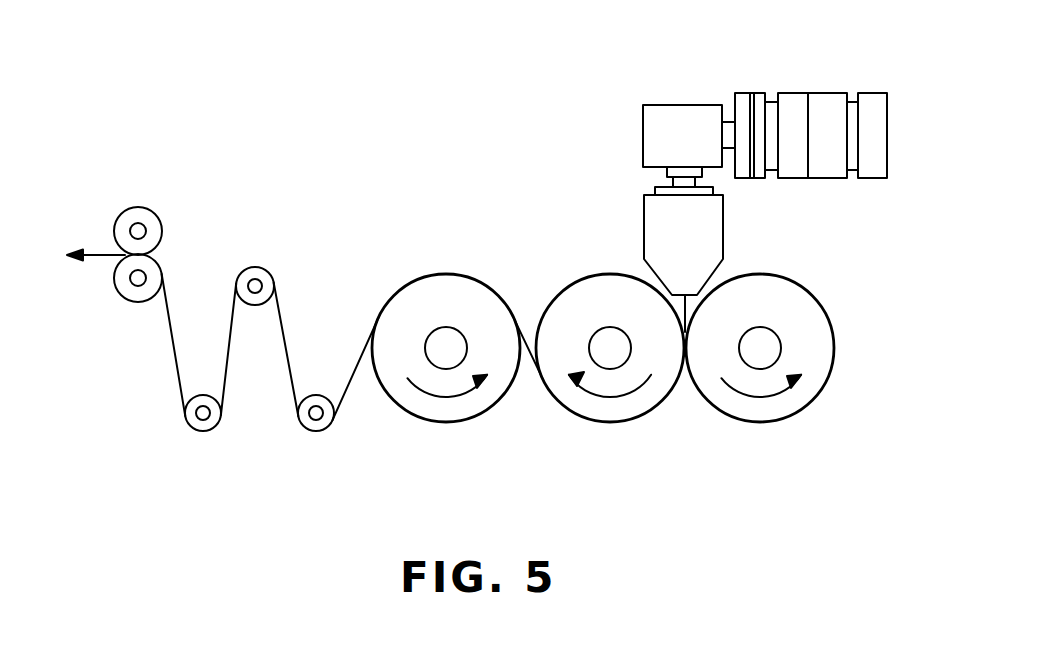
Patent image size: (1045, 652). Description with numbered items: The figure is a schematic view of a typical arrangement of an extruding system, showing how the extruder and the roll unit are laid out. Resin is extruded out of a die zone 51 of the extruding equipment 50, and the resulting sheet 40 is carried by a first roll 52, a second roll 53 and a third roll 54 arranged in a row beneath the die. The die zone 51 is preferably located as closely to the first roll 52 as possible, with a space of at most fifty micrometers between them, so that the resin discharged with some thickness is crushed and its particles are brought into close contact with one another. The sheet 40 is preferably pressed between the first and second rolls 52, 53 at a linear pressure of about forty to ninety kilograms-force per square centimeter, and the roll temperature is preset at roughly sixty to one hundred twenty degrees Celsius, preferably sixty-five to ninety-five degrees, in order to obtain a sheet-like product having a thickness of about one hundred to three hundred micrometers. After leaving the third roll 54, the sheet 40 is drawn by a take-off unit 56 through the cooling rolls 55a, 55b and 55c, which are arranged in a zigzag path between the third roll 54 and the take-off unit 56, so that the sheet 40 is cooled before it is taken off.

The sheet 40 is at (354, 373).
The extruding equipment 50 is at (817, 90).
The die zone 51 is at (647, 228).
The first roll 52 is at (763, 415).
The second roll 53 is at (613, 413).
The third roll 54 is at (450, 413).
The cooling roll 55a is at (316, 431).
The cooling roll 55b is at (252, 267).
The cooling roll 55c is at (205, 431).
The take-off unit 56 is at (137, 206).